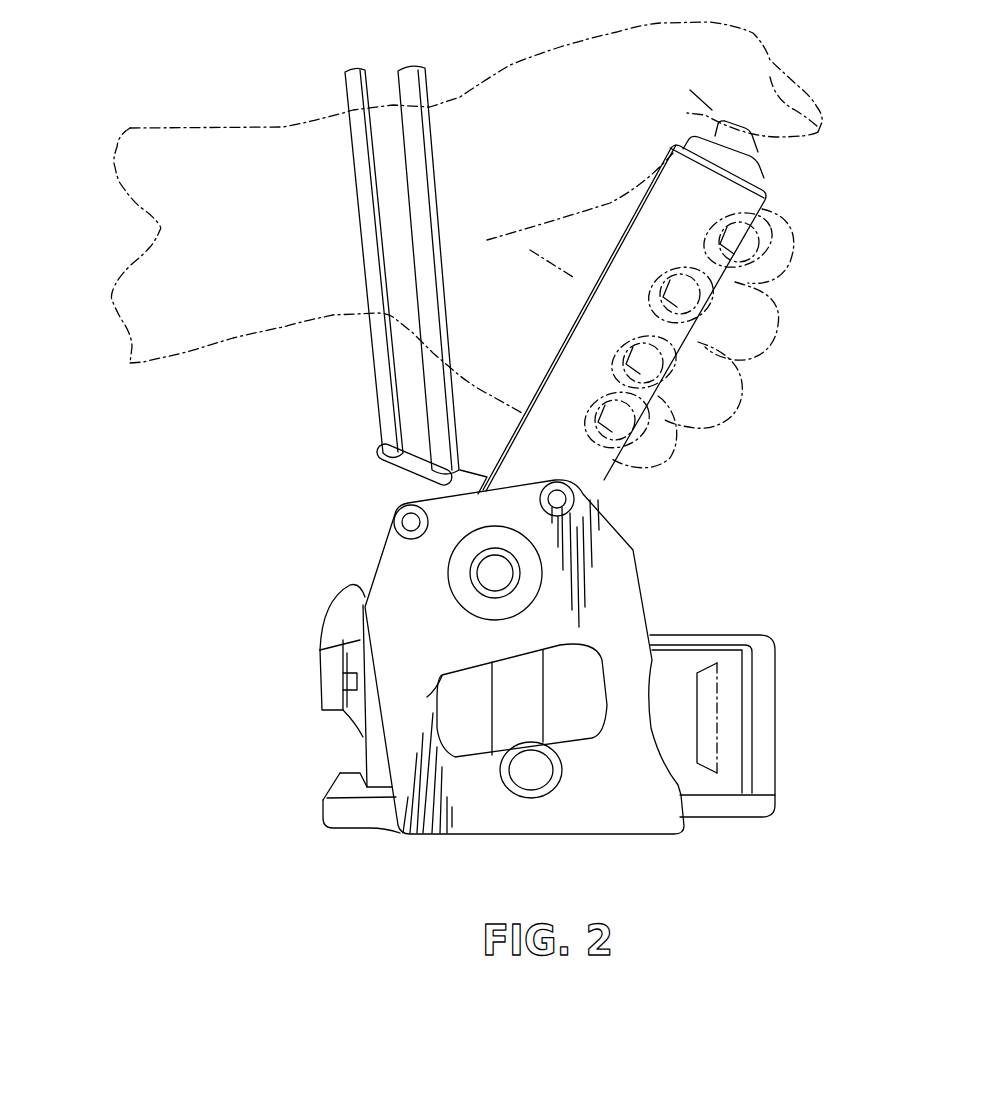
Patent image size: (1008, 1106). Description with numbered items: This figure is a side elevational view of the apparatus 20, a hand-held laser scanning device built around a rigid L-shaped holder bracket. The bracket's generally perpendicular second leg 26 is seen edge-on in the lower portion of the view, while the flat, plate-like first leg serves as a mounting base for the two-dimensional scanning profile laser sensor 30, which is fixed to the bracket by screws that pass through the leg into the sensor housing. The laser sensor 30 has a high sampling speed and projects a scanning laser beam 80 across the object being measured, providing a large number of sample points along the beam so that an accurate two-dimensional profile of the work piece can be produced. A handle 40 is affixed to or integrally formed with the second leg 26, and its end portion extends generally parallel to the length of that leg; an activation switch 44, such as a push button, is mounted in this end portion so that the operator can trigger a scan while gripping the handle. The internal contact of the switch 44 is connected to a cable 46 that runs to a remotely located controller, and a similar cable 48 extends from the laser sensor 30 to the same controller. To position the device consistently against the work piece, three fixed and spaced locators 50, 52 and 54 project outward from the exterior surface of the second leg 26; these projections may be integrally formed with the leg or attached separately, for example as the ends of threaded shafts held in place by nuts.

The apparatus 20 is at (366, 480).
The second leg 26 is at (385, 616).
The 2D scanning profile laser sensor 30 is at (718, 628).
The handle 40 is at (630, 218).
The activation switch 44 is at (740, 121).
The cable 46 is at (352, 98).
The cable 48 is at (410, 90).
The locator 50 is at (411, 523).
The locator 52 is at (558, 500).
The locator 54 is at (527, 775).
The scanning laser beam 80 is at (718, 723).